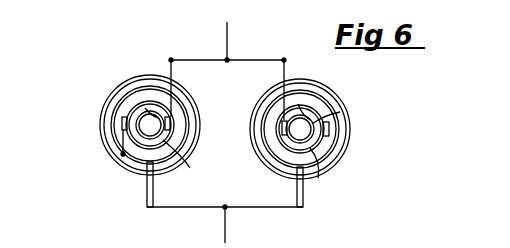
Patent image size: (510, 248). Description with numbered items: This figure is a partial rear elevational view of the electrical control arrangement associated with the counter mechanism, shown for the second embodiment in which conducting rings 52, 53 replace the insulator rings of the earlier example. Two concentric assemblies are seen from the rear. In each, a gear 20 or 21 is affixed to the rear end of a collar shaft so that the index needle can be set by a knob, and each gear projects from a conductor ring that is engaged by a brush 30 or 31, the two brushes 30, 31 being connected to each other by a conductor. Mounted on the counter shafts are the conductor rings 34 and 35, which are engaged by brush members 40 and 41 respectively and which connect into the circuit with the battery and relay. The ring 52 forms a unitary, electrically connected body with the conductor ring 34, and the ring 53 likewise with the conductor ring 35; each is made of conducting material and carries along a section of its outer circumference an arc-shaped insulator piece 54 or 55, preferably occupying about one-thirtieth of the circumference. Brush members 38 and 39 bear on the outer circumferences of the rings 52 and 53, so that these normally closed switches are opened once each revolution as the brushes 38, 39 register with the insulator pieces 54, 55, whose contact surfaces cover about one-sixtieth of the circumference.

The gear 20 is at (103, 150).
The gear 21 is at (333, 168).
The brush 30 is at (153, 192).
The brush 31 is at (298, 202).
The conductor ring 34 is at (140, 142).
The conductor ring 35 is at (305, 179).
The brush member 38 is at (122, 126).
The brush member 39 is at (330, 129).
The brush member 40 is at (170, 122).
The brush member 41 is at (270, 133).
The ring 52 is at (189, 159).
The ring 53 is at (340, 112).
The arc-shaped insulator piece 54 is at (145, 108).
The arc-shaped insulator piece 55 is at (298, 104).